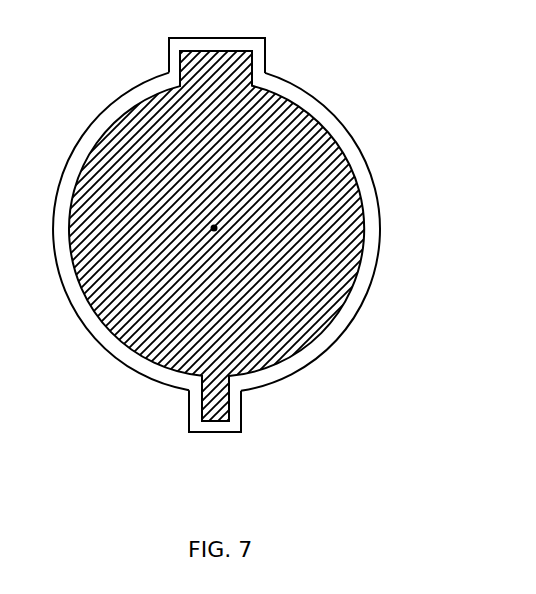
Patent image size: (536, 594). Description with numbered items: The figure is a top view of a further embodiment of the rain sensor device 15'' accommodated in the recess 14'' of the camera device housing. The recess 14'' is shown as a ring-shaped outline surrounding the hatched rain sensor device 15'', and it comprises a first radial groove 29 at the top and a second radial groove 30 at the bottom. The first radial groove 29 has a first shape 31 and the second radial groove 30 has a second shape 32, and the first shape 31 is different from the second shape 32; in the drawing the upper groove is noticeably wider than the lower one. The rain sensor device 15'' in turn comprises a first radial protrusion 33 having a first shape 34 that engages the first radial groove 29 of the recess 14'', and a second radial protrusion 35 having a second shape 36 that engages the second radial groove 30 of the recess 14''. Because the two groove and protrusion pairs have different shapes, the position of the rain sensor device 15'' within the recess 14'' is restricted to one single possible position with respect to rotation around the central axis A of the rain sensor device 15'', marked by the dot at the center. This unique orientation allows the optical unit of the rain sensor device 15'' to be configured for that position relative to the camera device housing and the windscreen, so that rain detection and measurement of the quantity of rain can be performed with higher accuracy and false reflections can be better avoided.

The recess 14'' is at (250, 238).
The rain sensor device 15'' is at (258, 236).
The first radial groove 29 is at (136, 62).
The first shape 31 is at (169, 58).
The first radial protrusion 33 is at (297, 66).
The first shape 34 is at (265, 58).
The second radial groove 30 is at (144, 414).
The second shape 32 is at (189, 412).
The second radial protrusion 35 is at (286, 414).
The second shape 36 is at (241, 405).
The central axis A is at (214, 228).